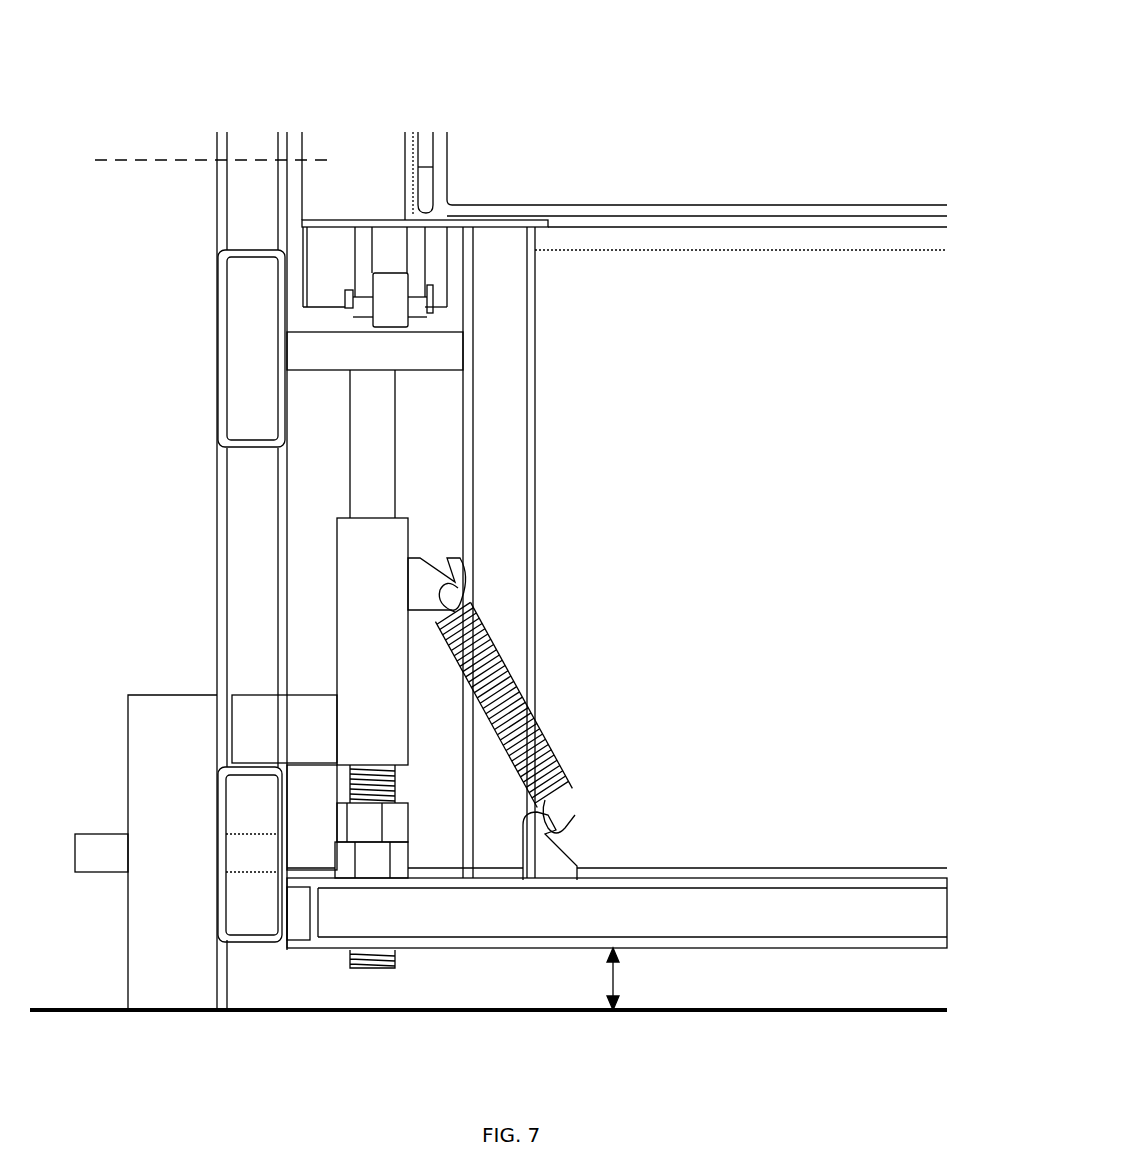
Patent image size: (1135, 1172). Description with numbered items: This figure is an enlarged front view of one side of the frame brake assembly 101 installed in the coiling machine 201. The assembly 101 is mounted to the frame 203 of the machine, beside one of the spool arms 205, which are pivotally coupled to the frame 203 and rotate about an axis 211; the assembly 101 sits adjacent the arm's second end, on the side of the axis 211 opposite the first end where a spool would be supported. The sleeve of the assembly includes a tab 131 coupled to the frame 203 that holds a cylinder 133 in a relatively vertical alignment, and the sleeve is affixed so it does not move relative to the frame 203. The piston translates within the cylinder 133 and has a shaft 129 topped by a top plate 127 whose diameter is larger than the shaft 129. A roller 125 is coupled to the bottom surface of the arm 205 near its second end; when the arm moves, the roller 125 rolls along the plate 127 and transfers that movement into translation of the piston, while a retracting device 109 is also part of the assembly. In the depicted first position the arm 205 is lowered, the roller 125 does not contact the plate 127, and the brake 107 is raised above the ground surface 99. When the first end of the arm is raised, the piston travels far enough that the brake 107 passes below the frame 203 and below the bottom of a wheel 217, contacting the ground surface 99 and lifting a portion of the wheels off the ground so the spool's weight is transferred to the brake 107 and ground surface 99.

The coiling machine 201 is at (714, 72).
The axis 211 is at (112, 160).
The frame 203 is at (215, 296).
The spool arms 205 is at (386, 204).
The roller 125 is at (452, 297).
The top plate 127 is at (333, 372).
The shaft 129 is at (395, 425).
The frame brake assembly 101 is at (652, 440).
The cylinder 133 is at (391, 631).
The tab 131 is at (299, 746).
The retracting device 109 is at (558, 741).
The brake 107 is at (745, 868).
The wheel 217 is at (191, 807).
The ground surface 99 is at (104, 1012).